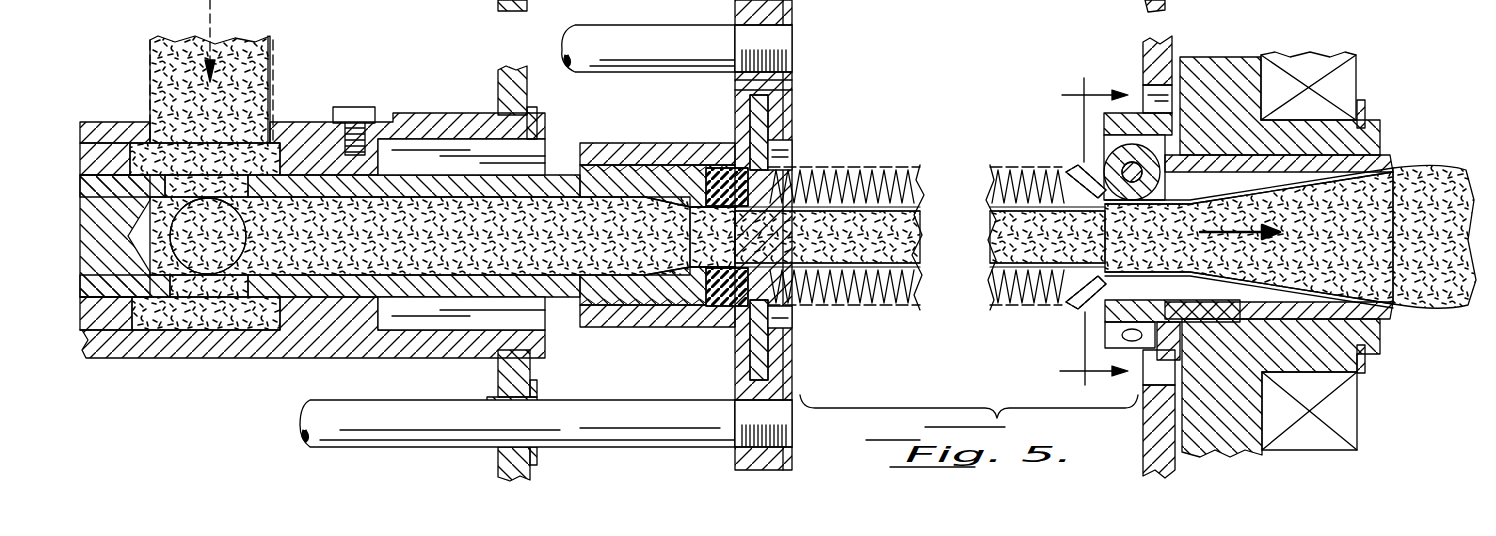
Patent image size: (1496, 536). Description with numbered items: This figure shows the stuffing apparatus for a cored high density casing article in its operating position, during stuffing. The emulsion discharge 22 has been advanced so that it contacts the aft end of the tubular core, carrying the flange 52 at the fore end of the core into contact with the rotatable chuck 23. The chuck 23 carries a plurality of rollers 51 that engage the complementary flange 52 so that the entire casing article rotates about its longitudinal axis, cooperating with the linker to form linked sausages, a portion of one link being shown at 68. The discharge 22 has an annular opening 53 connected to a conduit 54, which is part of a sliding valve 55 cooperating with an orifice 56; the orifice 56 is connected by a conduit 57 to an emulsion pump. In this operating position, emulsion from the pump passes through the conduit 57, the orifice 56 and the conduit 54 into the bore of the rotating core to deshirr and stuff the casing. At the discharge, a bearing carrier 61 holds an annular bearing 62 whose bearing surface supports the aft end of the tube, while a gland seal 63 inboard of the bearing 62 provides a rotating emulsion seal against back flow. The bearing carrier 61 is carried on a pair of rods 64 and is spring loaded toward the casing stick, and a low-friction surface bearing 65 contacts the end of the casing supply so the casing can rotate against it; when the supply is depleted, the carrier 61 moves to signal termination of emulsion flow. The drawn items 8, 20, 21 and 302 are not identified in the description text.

The section line 8- 8 is at (1079, 232).
The support post 20 is at (508, 10).
The support post 21 is at (1165, 10).
The emulsion discharge 22 is at (810, 146).
The rotatable chuck 23 is at (1382, 166).
The rollers 51 is at (1165, 160).
The flange 52 is at (1072, 172).
The annular opening 53 is at (796, 200).
The conduit 54 is at (556, 197).
The sliding valve 55 is at (275, 177).
The orifice 56 is at (158, 175).
The conduit 57 is at (273, 57).
The bearing carrier 61 is at (786, 84).
The annular bearing 62 is at (745, 168).
The gland seal 63 is at (722, 282).
The rods 64 is at (703, 22).
The surface bearing 65 is at (790, 322).
The link 68 is at (1470, 192).
The spring tube 302 is at (940, 198).